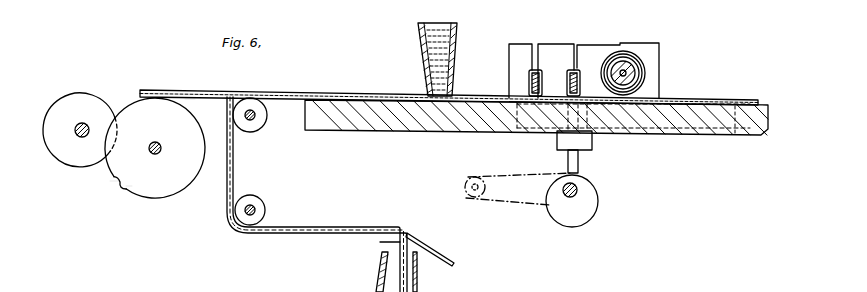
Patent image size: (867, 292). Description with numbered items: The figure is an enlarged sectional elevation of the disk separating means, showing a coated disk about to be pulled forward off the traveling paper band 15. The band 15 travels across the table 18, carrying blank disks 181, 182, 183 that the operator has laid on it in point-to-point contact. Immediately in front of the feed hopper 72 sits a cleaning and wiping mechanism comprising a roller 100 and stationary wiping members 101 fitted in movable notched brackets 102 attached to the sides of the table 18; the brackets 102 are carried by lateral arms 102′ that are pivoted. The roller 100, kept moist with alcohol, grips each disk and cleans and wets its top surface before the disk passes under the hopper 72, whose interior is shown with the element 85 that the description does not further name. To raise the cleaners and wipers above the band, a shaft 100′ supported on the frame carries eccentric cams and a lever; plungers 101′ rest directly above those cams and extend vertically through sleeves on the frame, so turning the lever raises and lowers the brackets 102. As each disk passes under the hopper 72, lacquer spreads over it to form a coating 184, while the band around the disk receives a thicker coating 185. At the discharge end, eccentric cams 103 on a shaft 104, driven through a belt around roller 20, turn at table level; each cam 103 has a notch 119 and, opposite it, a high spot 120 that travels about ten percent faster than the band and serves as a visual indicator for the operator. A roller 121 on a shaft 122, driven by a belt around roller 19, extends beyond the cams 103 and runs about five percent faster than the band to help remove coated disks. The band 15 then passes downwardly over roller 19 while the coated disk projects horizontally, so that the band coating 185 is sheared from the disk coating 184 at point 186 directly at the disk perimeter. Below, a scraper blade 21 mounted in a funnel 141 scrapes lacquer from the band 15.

The band 15 is at (438, 250).
The table 18 is at (418, 122).
The roller 19 is at (260, 128).
The roller 20 is at (265, 205).
The scraper blade 21 is at (393, 241).
The feed hopper 72 is at (435, 58).
The filler 85 is at (441, 40).
The roller 100 is at (647, 72).
The shaft 100′ is at (584, 200).
The stationary wiping members 101 is at (572, 69).
The plungers 101′ is at (566, 158).
The notched brackets 102 is at (652, 43).
The lateral arms 102′ is at (630, 106).
The eccentric cams 103 is at (113, 177).
The shaft 104 is at (144, 166).
The notch 119 is at (130, 190).
The high spot 120 is at (190, 100).
The roller 121 is at (45, 145).
The shaft 122 is at (77, 137).
The funnel 141 is at (382, 276).
The blank disk 181 is at (283, 92).
The blank disk 182 is at (487, 95).
The blank disk 183 is at (731, 101).
The coating 184 is at (400, 93).
The coating 185 is at (325, 234).
The point 186 is at (227, 98).